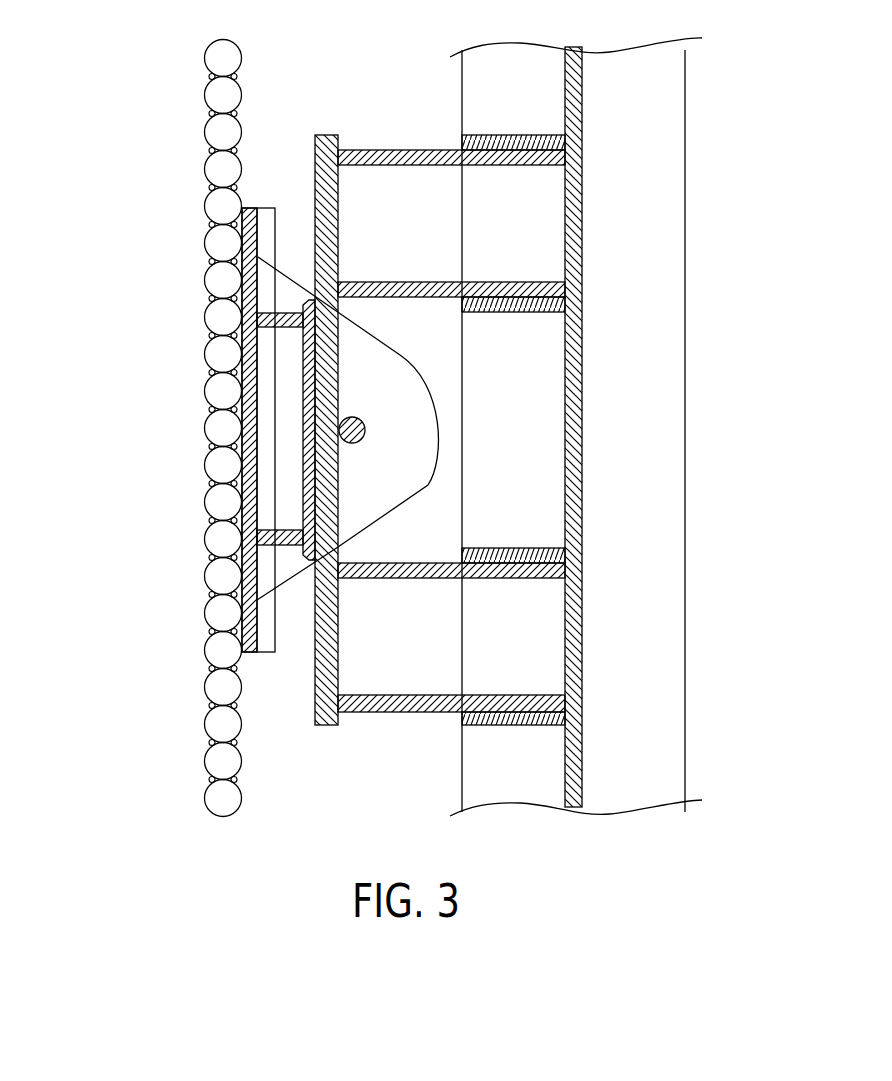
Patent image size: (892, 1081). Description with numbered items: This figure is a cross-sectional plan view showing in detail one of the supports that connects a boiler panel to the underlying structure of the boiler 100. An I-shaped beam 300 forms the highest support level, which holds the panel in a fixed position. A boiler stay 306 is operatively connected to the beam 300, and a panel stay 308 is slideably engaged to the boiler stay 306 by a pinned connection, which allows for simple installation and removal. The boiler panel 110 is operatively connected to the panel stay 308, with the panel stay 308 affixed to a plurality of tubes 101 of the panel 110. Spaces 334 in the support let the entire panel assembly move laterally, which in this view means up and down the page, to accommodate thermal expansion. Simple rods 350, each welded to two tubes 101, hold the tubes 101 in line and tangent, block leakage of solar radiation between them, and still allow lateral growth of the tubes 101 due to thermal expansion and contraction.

The boiler 100 is at (118, 860).
The boiler panel 110 is at (172, 548).
The tubes 101 is at (205, 207).
The rods 350 is at (213, 76).
The panel stay 308 is at (254, 182).
The boiler stay 306 is at (368, 122).
The spaces 334 is at (402, 310).
The beam 300 is at (520, 427).